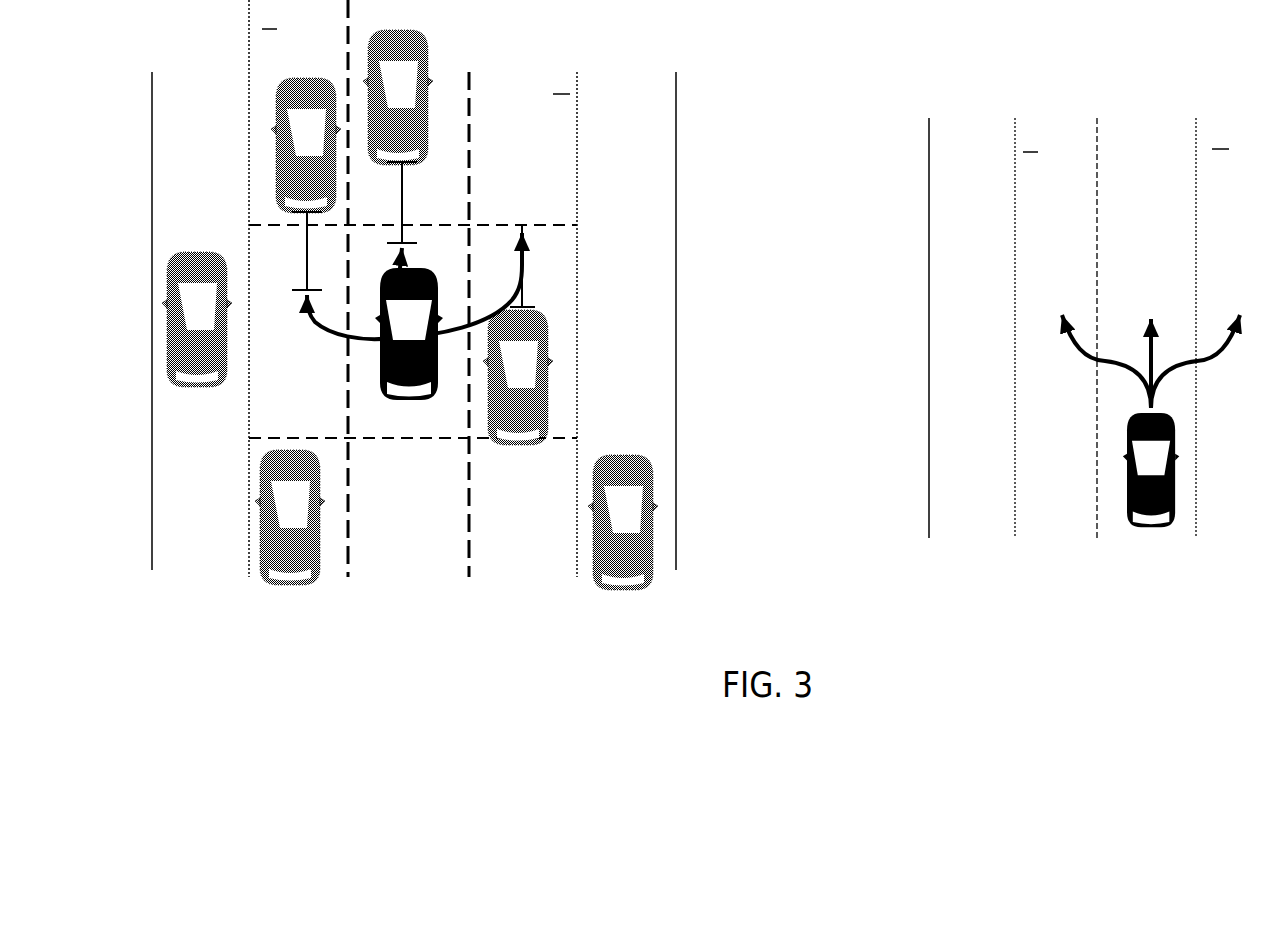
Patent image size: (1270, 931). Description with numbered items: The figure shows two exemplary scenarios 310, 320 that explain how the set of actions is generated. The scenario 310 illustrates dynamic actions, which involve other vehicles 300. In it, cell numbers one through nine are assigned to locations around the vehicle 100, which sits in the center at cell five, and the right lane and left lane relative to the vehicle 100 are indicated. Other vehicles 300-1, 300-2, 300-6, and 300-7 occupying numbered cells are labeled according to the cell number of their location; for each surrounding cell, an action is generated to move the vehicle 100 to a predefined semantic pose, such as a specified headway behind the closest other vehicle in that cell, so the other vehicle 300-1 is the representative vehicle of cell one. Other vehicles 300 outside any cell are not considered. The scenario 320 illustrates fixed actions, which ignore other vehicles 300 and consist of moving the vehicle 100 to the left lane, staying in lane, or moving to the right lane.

The scenario 310 is at (177, 66).
The scenario 320 is at (917, 88).
The vehicle 100 is at (397, 397).
The other vehicles 300 is at (203, 390).
The other vehicle 300-1 is at (302, 86).
The other vehicle 300-2 is at (428, 49).
The other vehicle 300-6 is at (548, 377).
The other vehicle 300-7 is at (321, 548).